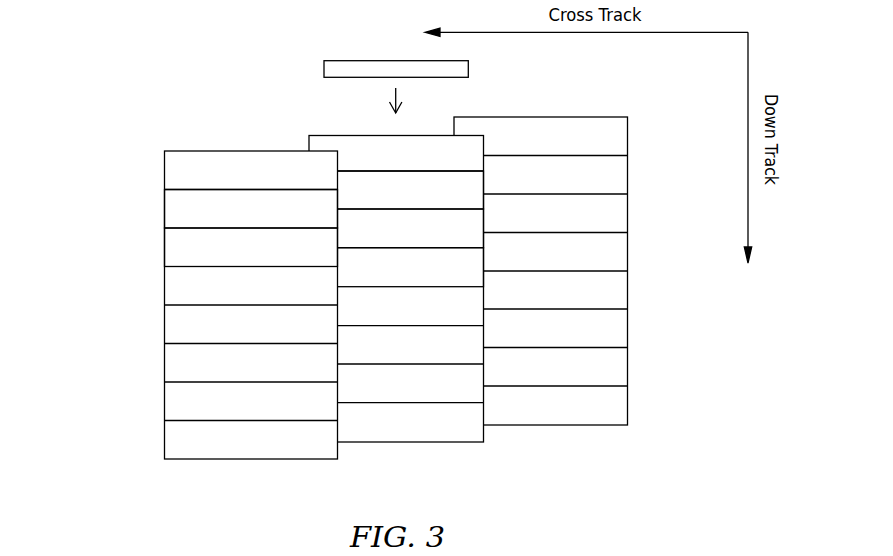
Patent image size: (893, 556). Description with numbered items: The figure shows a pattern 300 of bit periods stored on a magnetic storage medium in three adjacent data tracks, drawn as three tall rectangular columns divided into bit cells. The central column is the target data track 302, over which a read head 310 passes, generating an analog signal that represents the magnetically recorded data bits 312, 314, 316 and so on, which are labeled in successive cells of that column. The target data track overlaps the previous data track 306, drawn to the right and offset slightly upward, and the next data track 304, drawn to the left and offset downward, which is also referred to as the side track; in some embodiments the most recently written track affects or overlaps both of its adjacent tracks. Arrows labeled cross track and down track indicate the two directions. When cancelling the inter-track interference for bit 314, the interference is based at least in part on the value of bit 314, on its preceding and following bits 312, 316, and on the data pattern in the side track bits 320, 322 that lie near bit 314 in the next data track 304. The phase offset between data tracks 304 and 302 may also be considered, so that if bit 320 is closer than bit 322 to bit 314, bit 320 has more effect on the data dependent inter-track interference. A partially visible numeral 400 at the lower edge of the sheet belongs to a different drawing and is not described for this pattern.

The pattern of bit periods 300 is at (107, 41).
The target data track 302 is at (396, 322).
The next data track 304 is at (251, 337).
The previous data track 306 is at (556, 435).
The read head 310 is at (324, 66).
The data bit 312 is at (379, 204).
The data bit 314 is at (379, 242).
The data bit 316 is at (379, 280).
The side track bit 320 is at (234, 222).
The side track bit 322 is at (234, 260).
The next figure reference (partial) 400 is at (657, 555).